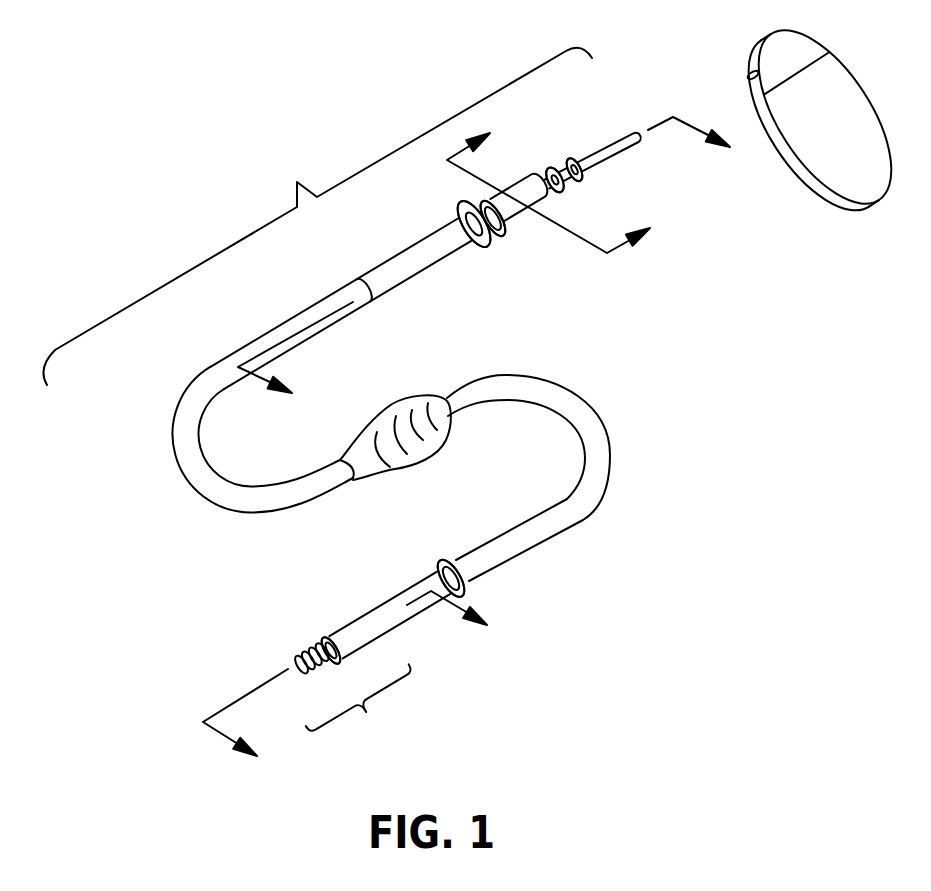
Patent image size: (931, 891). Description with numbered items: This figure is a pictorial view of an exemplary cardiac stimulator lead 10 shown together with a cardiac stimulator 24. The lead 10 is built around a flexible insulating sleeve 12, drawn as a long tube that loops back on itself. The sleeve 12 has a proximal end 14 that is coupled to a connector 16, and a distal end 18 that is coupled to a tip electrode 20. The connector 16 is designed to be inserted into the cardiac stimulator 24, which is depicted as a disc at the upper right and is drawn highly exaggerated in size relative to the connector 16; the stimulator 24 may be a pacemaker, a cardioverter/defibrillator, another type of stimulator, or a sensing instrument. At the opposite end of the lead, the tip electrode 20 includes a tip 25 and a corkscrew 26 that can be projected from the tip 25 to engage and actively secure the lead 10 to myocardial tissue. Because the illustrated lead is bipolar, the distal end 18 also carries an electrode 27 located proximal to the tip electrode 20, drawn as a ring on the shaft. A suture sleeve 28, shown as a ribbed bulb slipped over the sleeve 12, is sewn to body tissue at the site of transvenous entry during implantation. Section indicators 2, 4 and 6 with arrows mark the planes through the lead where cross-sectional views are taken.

The cardiac stimulator lead 10 is at (297, 182).
The flexible insulating sleeve 12 is at (190, 483).
The proximal end 14 is at (348, 316).
The connector 16 is at (447, 258).
The distal end 18 is at (406, 621).
The tip electrode 20 is at (367, 712).
The cardiac stimulator 24 is at (783, 172).
The tip 25 is at (317, 641).
The corkscrew 26 is at (298, 666).
The electrode 27 is at (441, 562).
The suture sleeve 28 is at (388, 409).
The section line 2- 2 is at (499, 273).
The section line 4- 4 is at (564, 174).
The section line 6- 6 is at (359, 690).